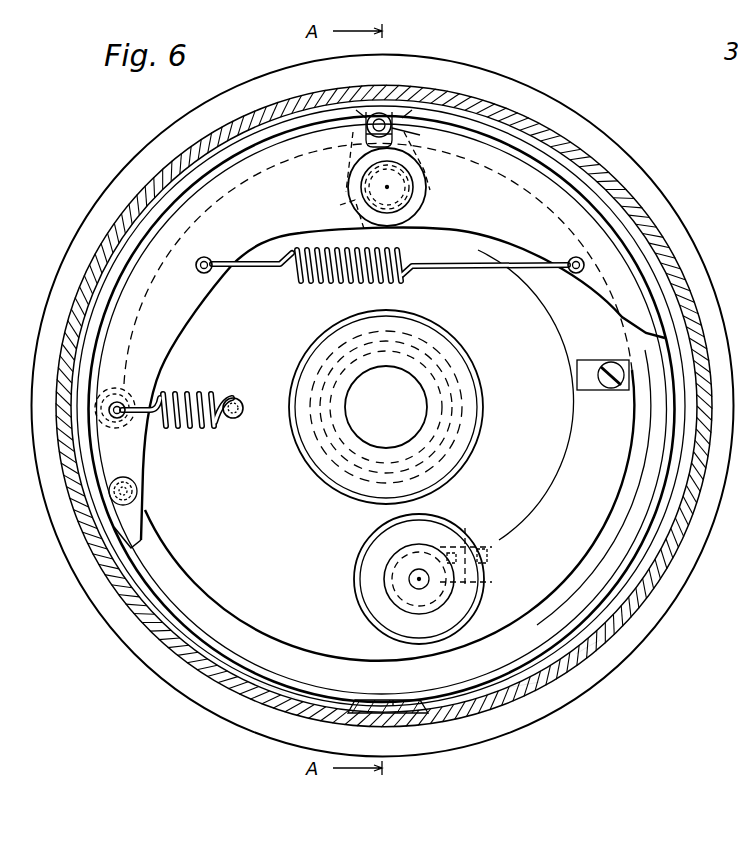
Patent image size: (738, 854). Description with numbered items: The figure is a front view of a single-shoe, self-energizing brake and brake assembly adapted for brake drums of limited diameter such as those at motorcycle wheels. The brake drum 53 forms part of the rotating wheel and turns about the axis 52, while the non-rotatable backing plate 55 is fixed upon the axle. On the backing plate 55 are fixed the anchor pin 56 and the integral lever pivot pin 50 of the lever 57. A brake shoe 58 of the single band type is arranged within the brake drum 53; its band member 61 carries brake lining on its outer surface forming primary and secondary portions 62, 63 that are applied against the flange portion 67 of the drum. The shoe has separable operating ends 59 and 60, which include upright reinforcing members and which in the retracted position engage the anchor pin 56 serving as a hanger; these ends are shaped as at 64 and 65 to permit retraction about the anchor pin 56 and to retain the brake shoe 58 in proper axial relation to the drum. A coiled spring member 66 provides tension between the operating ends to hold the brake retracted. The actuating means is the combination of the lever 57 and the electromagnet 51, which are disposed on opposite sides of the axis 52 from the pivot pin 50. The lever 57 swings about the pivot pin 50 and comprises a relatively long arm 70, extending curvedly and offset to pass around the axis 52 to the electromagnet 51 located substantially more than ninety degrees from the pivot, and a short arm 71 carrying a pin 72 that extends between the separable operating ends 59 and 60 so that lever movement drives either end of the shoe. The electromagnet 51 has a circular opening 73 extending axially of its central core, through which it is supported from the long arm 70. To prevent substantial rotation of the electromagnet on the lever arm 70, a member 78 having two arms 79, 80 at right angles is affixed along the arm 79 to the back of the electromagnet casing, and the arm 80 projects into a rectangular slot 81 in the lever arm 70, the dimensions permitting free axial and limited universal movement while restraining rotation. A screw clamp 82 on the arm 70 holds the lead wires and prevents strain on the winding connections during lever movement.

The lever pivot pin 50 is at (428, 193).
The electromagnet 51 is at (490, 600).
The axis 52 is at (386, 407).
The brake drum 53 is at (503, 84).
The backing plate 55 is at (517, 123).
The anchor pin 56 is at (353, 203).
The lever 57 is at (548, 322).
The brake shoe 58 is at (540, 144).
The separable operating end 59 is at (396, 138).
The separable operating end 60 is at (362, 126).
The band member 61 is at (419, 709).
The primary lining portion 62 is at (486, 694).
The secondary lining portion 63 is at (258, 683).
The shaped portion of operating end 64 is at (412, 184).
The shaped portion of operating end 65 is at (352, 184).
The coiled spring member 66 is at (409, 277).
The flange portion 67 is at (576, 654).
The long arm 70 is at (541, 564).
The short arm 71 is at (372, 114).
The pin 72 is at (382, 122).
The circular opening 73 is at (412, 582).
The member 78 is at (463, 530).
The arm 79 is at (452, 590).
The arm 80 is at (484, 554).
The rectangular slot 81 is at (488, 562).
The screw clamp 82 is at (597, 387).